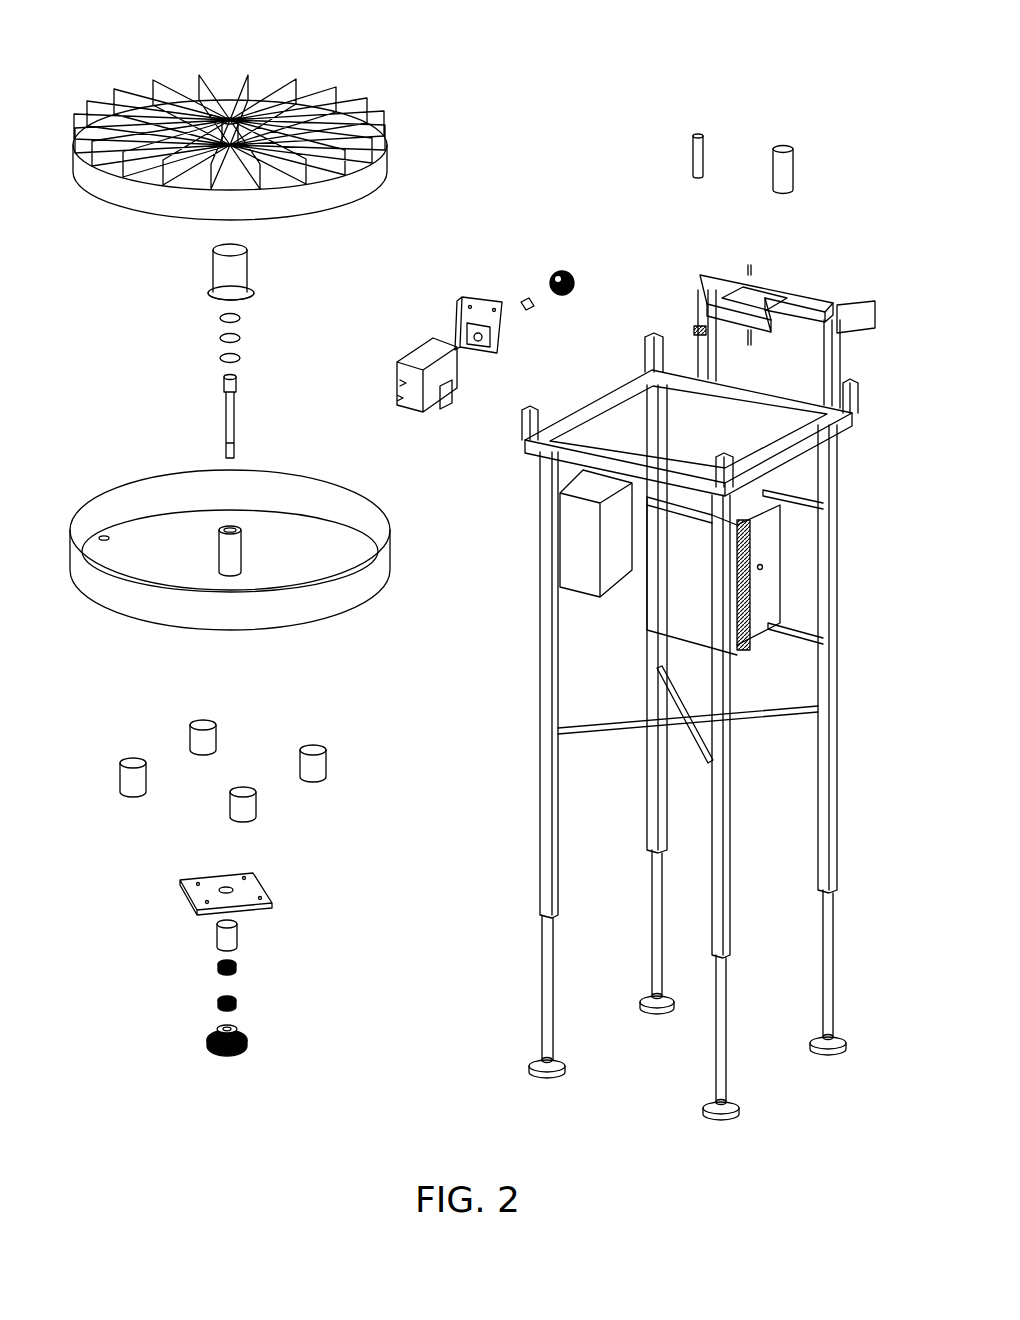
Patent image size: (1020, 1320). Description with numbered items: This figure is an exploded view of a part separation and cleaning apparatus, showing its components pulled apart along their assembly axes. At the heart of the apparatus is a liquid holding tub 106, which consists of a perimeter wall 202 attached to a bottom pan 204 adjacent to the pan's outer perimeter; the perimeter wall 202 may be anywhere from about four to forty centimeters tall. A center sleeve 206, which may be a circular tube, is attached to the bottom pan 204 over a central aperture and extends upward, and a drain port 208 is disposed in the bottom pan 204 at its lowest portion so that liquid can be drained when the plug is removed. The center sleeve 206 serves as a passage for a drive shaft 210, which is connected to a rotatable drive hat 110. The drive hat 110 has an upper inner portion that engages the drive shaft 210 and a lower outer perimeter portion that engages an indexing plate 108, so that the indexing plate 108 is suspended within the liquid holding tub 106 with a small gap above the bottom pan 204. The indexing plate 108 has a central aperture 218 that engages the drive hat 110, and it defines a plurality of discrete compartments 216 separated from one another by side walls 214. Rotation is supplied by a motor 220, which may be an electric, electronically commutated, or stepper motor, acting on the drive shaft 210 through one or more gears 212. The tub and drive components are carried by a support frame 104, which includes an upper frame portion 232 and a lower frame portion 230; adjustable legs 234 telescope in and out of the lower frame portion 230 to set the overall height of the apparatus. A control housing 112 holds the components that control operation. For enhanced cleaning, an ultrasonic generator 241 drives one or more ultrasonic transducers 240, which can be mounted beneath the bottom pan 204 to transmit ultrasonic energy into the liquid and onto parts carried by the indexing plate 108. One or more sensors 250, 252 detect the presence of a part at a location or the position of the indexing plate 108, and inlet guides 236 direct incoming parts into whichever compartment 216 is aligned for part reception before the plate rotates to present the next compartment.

The support frame 104 is at (700, 687).
The liquid holding tub 106 is at (245, 560).
The indexing plate 108 is at (274, 120).
The drive hat 110 is at (227, 277).
The control housing 112 is at (763, 588).
The perimeter wall 202 is at (83, 578).
The bottom pan 204 is at (150, 568).
The center sleeve 206 is at (233, 553).
The drain port 208 is at (105, 537).
The drive shaft 210 is at (230, 418).
The gears 212 is at (560, 277).
The side walls 214 is at (337, 107).
The compartments 216 is at (292, 90).
The central aperture 218 is at (197, 84).
The motor 220 is at (430, 347).
The lower frame portion 230 is at (827, 772).
The upper frame portion 232 is at (828, 360).
The adjustable legs 234 is at (828, 973).
The inlet guides 236 is at (856, 312).
The ultrasonic transducers 240 is at (132, 788).
The ultrasonic generator 241 is at (577, 552).
The sensor 250 is at (697, 150).
The sensor 252 is at (787, 170).